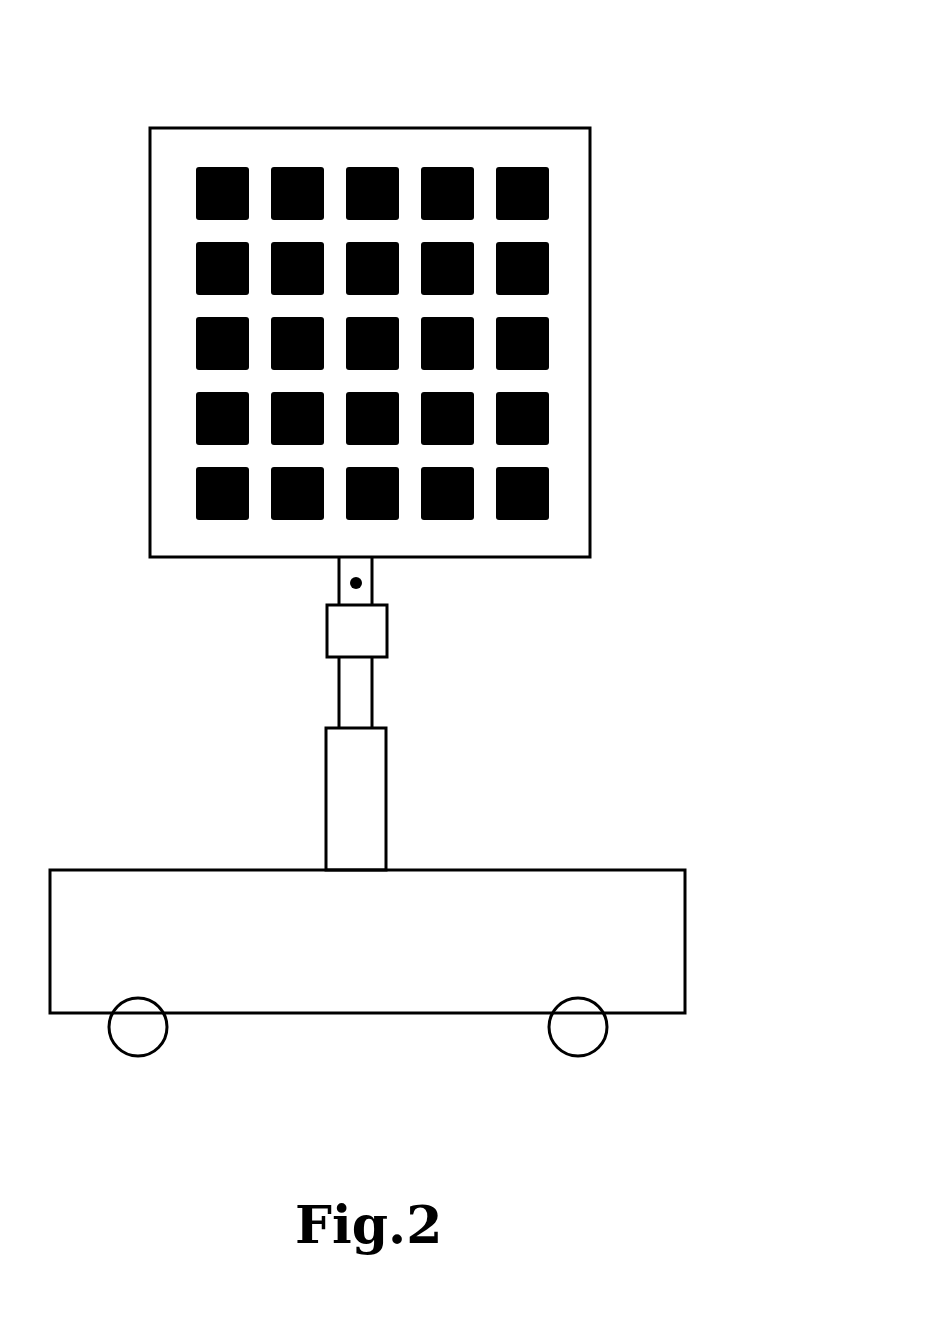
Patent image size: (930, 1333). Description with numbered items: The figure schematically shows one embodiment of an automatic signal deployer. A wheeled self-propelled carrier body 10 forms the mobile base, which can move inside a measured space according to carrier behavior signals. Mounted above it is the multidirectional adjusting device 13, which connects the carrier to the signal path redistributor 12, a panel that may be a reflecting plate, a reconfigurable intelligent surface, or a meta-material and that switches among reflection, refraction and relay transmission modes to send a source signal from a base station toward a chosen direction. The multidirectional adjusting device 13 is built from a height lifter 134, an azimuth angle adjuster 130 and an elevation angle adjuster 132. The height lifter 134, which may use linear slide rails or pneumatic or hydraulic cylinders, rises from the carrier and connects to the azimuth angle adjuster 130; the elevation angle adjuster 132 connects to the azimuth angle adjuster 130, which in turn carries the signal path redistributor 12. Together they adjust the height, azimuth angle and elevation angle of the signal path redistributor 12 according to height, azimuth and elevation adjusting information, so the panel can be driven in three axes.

The mobile base 10 is at (590, 908).
The signal path redistributor 12 is at (497, 137).
The multidirectional adjusting device 13 is at (310, 713).
The azimuth angle adjuster 130 is at (387, 632).
The elevation angle adjuster 132 is at (350, 583).
The height lifter 134 is at (380, 818).